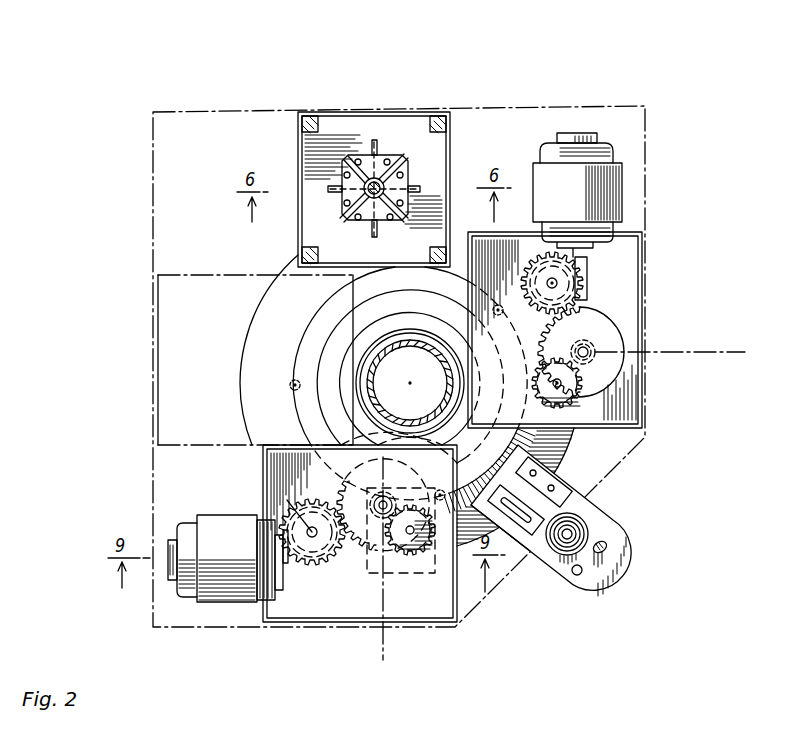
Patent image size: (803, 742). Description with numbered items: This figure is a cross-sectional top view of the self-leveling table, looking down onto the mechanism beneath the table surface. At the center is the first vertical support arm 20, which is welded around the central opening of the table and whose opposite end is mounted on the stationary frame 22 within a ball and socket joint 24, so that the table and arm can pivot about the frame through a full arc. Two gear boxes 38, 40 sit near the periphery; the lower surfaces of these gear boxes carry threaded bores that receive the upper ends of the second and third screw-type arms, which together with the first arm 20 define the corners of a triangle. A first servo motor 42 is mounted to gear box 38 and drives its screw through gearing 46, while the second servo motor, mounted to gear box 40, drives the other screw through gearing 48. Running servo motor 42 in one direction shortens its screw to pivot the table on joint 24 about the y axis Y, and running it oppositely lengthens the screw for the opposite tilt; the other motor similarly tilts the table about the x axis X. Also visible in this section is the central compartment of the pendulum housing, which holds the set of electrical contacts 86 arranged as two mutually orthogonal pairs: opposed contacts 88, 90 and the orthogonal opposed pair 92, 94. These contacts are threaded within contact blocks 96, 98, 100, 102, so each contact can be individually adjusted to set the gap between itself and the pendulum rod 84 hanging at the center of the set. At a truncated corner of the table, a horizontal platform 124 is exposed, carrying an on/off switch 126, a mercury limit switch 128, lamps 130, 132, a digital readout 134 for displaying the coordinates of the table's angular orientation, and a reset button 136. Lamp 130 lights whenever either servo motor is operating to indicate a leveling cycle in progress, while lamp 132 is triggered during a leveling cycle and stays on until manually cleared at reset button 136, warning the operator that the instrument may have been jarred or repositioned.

The first vertical support arm 20 is at (367, 397).
The stationary frame 22 is at (252, 448).
The ball and socket joint 24 is at (330, 375).
The gear box 38 is at (440, 628).
The gear box 40 is at (643, 400).
The first servo motor 42 is at (230, 602).
The gearing 46 is at (355, 555).
The gearing 48 is at (612, 292).
The pendulum rod 84 is at (371, 179).
The electrical contacts 86 is at (343, 150).
The contact 88 is at (374, 140).
The contact 90 is at (374, 240).
The contact 92 is at (337, 188).
The contact 94 is at (608, 190).
The contact block 96 is at (388, 150).
The contact block 98 is at (360, 224).
The contact block 100 is at (345, 198).
The contact block 102 is at (413, 197).
The horizontal platform 124 is at (607, 572).
The on/off switch 126 is at (607, 543).
The mercury limit switch 128 is at (577, 528).
The lamp 130 is at (580, 574).
The lamp 132 is at (582, 500).
The digital readout 134 is at (530, 533).
The reset button 136 is at (553, 465).
The x axis X is at (401, 571).
The y axis Y is at (664, 352).